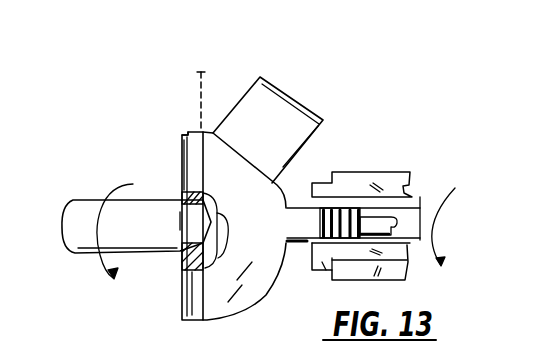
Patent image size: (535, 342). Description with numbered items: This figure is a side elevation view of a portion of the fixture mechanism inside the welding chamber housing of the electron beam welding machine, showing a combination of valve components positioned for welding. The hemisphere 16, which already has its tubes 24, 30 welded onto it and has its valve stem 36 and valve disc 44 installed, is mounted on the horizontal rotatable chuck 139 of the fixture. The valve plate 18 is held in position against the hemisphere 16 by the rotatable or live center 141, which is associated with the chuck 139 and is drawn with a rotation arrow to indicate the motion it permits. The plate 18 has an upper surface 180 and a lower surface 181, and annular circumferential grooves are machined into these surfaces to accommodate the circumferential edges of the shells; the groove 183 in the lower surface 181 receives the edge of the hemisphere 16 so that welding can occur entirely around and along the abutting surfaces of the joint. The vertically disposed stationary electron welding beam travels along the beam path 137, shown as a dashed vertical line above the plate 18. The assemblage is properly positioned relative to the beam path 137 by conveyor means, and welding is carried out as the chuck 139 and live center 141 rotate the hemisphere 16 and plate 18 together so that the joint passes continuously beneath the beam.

The beam path 137 is at (200, 72).
The tube 24 is at (260, 78).
The valve plate 18 is at (203, 125).
The annular circumferential groove 183 is at (183, 135).
The lower surface 181 is at (182, 155).
The upper surface 180 is at (190, 300).
The hemisphere 16 is at (242, 303).
The valve disc 44 is at (245, 272).
The live center 141 is at (82, 252).
The tube 30 is at (293, 208).
The rotatable chuck 139 is at (388, 172).
The valve stem 36 is at (377, 222).